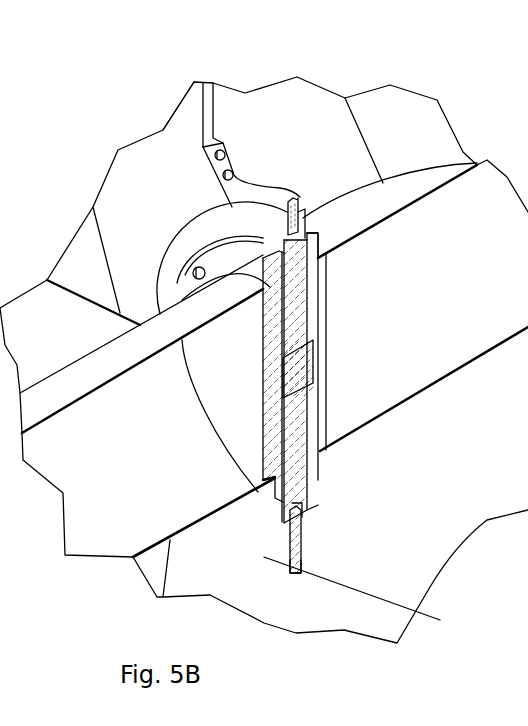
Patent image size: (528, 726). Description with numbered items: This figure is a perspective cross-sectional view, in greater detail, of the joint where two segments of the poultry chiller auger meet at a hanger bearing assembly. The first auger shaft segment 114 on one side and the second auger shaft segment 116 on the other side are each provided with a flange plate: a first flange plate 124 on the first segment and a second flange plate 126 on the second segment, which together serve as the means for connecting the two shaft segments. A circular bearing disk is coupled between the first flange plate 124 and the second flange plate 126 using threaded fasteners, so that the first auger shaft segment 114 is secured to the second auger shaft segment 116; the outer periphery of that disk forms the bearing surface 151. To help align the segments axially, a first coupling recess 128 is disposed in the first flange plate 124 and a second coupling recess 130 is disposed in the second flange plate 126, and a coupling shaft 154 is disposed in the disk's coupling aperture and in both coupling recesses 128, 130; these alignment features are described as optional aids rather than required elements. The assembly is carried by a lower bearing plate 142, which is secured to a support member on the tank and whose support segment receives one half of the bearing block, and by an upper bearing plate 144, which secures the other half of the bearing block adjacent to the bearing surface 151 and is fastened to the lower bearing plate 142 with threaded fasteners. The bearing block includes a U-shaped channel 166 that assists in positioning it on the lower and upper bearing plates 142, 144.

The first auger shaft segment 114 is at (101, 489).
The second auger shaft segment 116 is at (510, 278).
The first flange plate 124 is at (236, 432).
The second flange plate 126 is at (319, 294).
The first coupling recess 128 is at (281, 373).
The second coupling recess 130 is at (313, 357).
The lower bearing plate 142 is at (224, 204).
The upper bearing plate 144 is at (302, 195).
The bearing surface 151 is at (318, 257).
The coupling shaft 154 is at (300, 398).
The U-shaped channel 166 is at (306, 497).